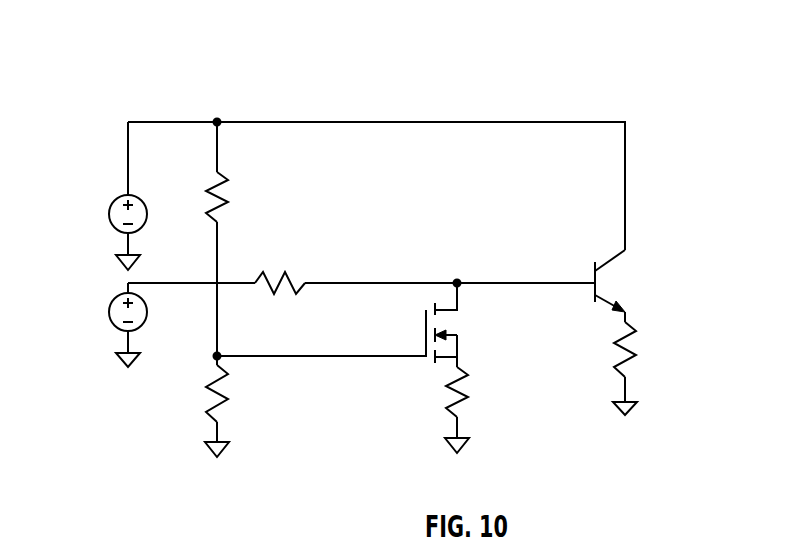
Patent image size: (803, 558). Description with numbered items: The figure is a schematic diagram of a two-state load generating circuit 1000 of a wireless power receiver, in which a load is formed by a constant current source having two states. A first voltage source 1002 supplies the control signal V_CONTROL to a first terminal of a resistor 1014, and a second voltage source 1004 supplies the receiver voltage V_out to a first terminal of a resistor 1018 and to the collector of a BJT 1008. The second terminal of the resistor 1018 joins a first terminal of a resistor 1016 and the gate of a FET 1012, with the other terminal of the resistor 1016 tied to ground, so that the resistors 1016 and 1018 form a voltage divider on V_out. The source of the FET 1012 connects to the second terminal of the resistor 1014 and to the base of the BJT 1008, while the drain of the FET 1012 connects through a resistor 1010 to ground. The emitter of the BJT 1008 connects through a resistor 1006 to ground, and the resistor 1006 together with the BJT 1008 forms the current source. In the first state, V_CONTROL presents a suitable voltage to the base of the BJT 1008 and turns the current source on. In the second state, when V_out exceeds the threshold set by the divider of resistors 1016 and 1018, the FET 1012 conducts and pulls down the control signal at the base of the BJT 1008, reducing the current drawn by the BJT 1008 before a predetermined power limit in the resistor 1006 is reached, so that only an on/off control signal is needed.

The two-state load generating circuit 1000 is at (168, 47).
The first voltage source 1002 is at (87, 300).
The second voltage source 1004 is at (90, 203).
The resistor 1006 is at (653, 372).
The BJT 1008 is at (642, 270).
The resistor 1010 is at (490, 403).
The FET 1012 is at (492, 322).
The resistor 1014 is at (285, 275).
The resistor 1016 is at (247, 407).
The resistor 1018 is at (248, 188).